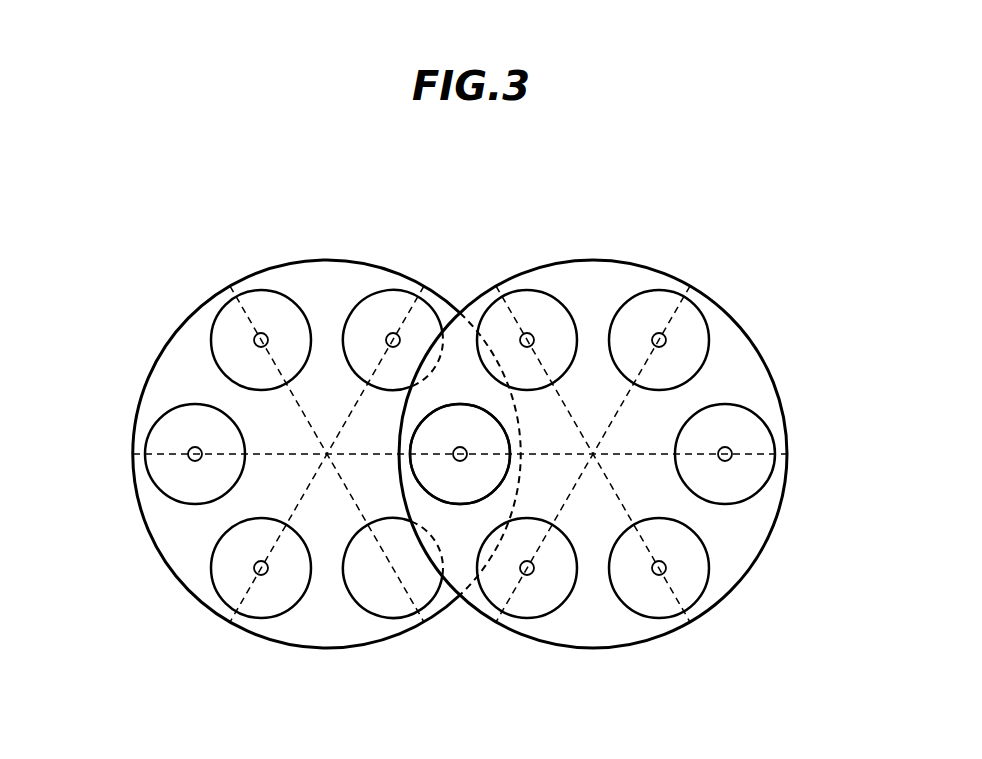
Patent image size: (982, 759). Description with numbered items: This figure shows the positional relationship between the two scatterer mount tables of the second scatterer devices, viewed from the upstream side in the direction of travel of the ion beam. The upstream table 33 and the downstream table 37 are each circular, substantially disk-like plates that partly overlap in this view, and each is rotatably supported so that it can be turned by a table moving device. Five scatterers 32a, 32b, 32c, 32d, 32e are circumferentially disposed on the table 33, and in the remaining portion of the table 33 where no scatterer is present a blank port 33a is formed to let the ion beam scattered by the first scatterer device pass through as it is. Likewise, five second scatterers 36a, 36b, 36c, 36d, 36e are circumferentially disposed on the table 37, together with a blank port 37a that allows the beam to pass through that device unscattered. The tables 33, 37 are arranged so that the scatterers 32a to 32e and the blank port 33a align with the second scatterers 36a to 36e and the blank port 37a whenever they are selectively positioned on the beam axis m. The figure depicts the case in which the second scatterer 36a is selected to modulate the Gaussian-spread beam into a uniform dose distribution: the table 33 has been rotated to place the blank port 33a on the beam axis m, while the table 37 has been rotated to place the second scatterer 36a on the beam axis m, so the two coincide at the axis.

The scatterer mount table 37 is at (168, 340).
The scatterer mount table 33 is at (762, 350).
The second scatterer 36a is at (427, 472).
The second scatterer 36b is at (393, 305).
The second scatterer 36c is at (270, 305).
The second scatterer 36d is at (168, 427).
The second scatterer 36e is at (260, 603).
The blank port 37a is at (367, 607).
The blank port 33a is at (495, 442).
The beam axis m is at (461, 445).
The scatterer 32a is at (528, 603).
The scatterer 32b is at (655, 605).
The scatterer 32c is at (753, 432).
The scatterer 32d is at (658, 305).
The scatterer 32e is at (528, 305).